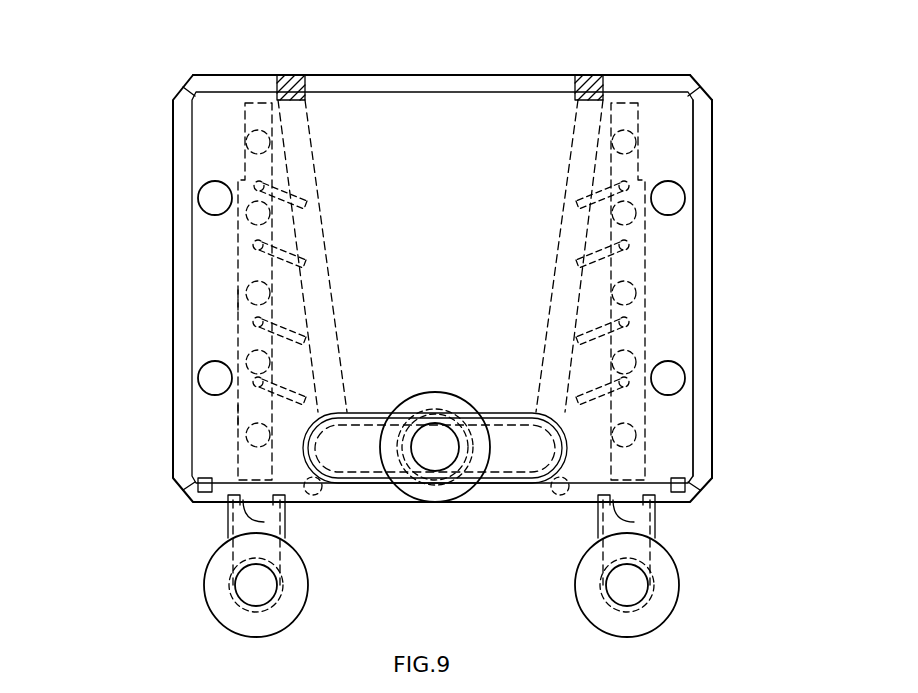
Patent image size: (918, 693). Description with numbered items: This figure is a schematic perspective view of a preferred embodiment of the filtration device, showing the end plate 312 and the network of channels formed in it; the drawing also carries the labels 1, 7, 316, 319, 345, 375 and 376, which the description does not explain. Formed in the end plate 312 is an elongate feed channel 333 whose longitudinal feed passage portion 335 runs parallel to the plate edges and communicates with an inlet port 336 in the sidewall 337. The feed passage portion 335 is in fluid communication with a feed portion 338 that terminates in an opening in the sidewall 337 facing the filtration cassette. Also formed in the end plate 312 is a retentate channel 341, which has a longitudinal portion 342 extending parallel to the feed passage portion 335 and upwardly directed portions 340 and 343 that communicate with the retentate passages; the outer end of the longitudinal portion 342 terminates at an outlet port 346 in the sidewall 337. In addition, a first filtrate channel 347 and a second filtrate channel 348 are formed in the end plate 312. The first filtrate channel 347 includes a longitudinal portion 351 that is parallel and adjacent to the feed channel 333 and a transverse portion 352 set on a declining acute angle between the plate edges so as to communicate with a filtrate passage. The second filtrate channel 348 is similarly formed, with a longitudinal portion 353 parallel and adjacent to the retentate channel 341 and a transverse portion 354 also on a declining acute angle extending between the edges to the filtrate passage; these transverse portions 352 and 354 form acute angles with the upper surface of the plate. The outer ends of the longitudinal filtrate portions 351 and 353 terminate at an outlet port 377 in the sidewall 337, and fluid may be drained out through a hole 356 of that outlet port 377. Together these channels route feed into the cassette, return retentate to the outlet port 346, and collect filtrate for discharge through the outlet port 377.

The top edge of mounting frame 1 is at (648, 76).
The side wall of frame 7 is at (712, 297).
The end plate 312 is at (458, 54).
The outer side edge 316 is at (712, 118).
The mounting plate face 319 is at (459, 199).
The feed channel 333 is at (640, 413).
The feed passage portion 335 is at (640, 353).
The inlet port 336 is at (625, 500).
The sidewall 337 is at (662, 515).
The feed portion 338 is at (640, 292).
The upwardly directed portion of retentate channel 340 is at (245, 275).
The retentate channel 341 is at (243, 298).
The longitudinal portion of retentate channel 342 is at (238, 416).
The upwardly directed portion of retentate channel 343 is at (245, 142).
The fastener peg 345 is at (240, 322).
The outlet port 346 is at (250, 500).
The first filtrate channel 347 is at (573, 125).
The second filtrate channel 348 is at (310, 125).
The longitudinal portion of first filtrate channel 351 is at (553, 238).
The transverse portion of first filtrate channel 352 is at (585, 392).
The longitudinal portion of second filtrate channel 353 is at (330, 277).
The transverse portion of second filtrate channel 354 is at (297, 334).
The hole 356 is at (435, 447).
The right roller 375 is at (679, 585).
The left roller 376 is at (308, 590).
The outlet port 377 is at (455, 492).